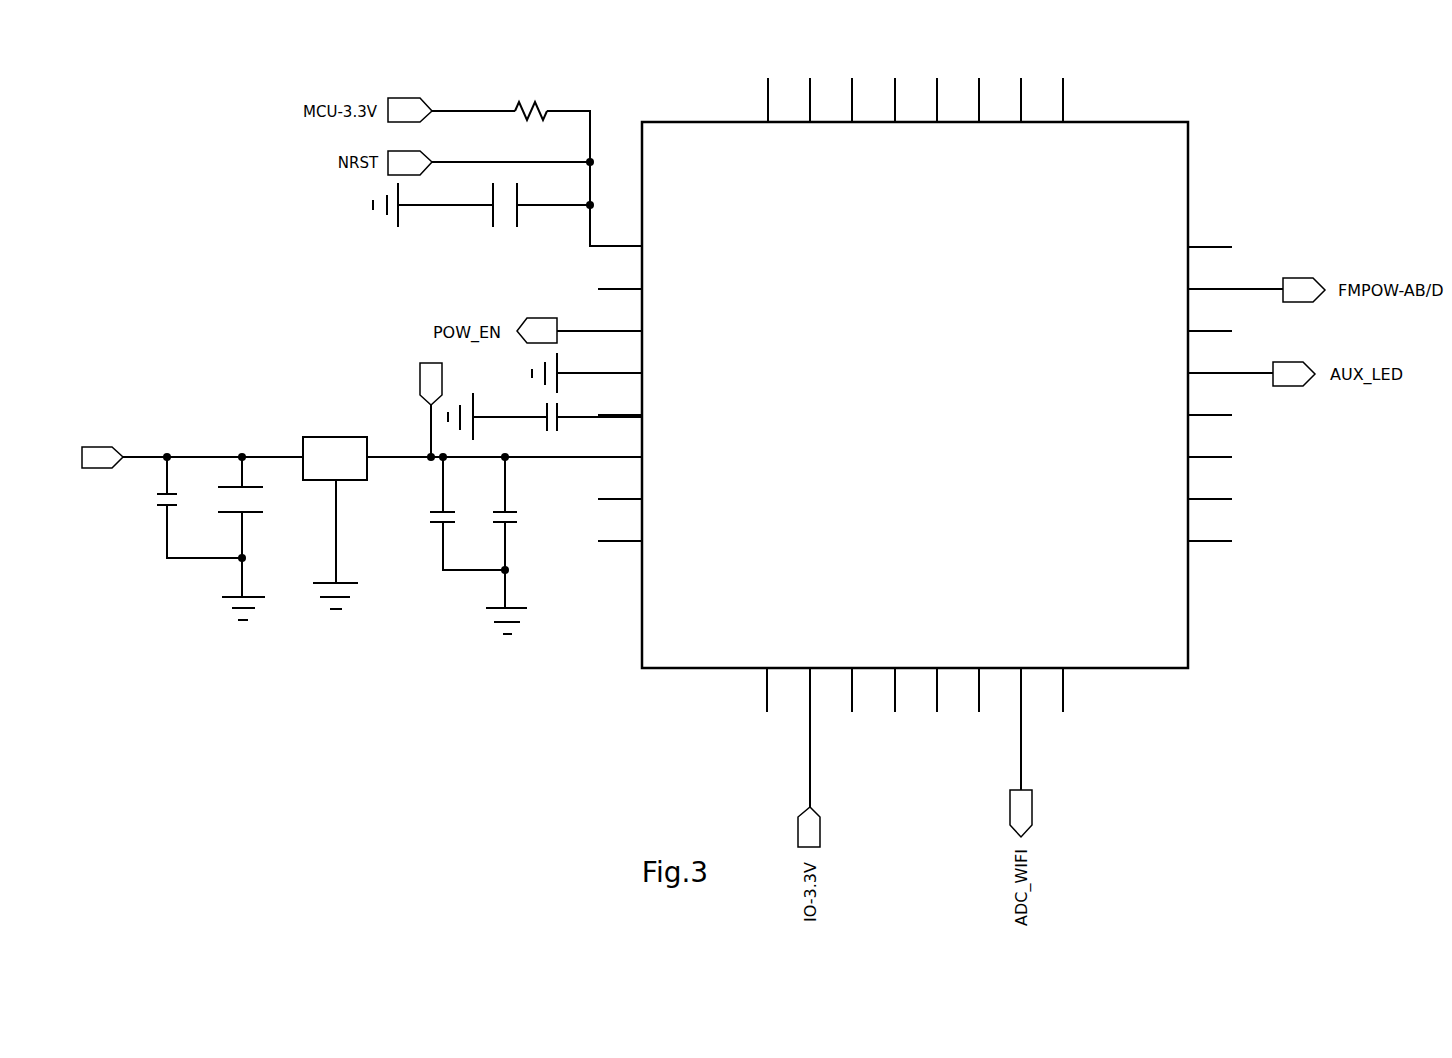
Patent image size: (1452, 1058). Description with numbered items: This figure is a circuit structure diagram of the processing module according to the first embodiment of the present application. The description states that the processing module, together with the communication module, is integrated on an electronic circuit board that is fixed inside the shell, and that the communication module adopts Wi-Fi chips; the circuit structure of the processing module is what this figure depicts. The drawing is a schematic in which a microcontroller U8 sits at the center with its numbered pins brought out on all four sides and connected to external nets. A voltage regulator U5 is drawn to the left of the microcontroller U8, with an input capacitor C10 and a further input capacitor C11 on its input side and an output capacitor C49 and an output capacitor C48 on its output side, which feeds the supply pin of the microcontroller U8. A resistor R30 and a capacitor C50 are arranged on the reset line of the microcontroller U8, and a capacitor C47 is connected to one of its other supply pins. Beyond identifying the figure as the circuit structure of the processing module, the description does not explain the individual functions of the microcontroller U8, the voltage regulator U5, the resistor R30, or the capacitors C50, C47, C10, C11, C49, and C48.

The MCU microcontroller U8 is at (915, 395).
The WL2805-3V3 voltage regulator U5 is at (338, 480).
The 10k reset pull-up resistor R30 is at (527, 118).
The reset capacitor 104 C50 is at (481, 204).
The VCAP capacitor 105 C47 is at (545, 416).
The input capacitor 106 C10 is at (182, 507).
The input capacitor 104 C11 is at (241, 538).
The output capacitor 105 C49 is at (462, 513).
The output capacitor 104 C48 is at (503, 545).